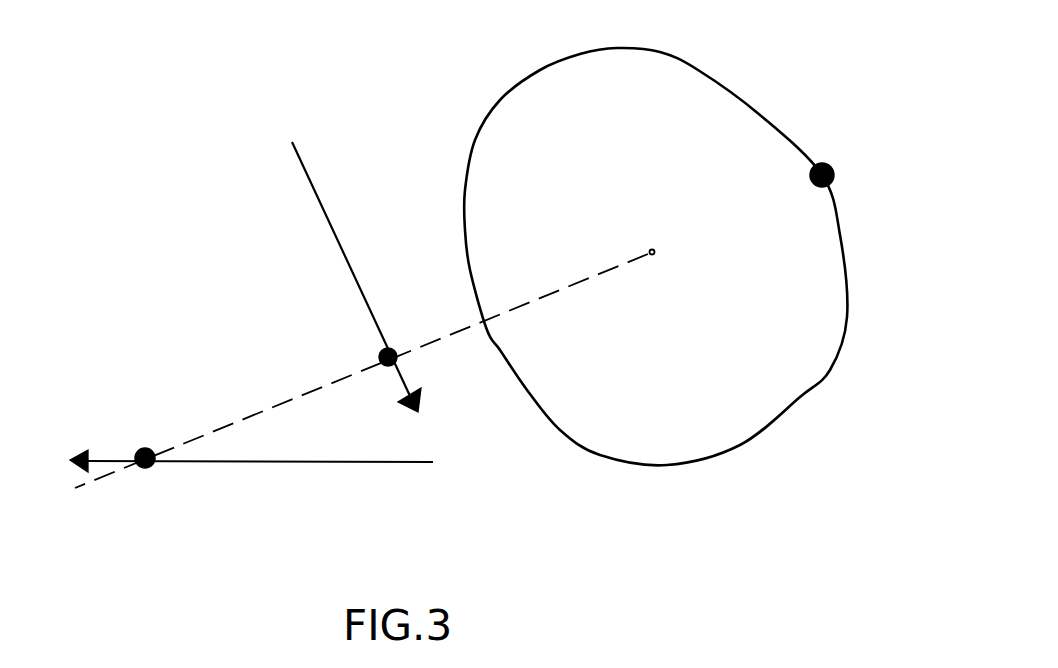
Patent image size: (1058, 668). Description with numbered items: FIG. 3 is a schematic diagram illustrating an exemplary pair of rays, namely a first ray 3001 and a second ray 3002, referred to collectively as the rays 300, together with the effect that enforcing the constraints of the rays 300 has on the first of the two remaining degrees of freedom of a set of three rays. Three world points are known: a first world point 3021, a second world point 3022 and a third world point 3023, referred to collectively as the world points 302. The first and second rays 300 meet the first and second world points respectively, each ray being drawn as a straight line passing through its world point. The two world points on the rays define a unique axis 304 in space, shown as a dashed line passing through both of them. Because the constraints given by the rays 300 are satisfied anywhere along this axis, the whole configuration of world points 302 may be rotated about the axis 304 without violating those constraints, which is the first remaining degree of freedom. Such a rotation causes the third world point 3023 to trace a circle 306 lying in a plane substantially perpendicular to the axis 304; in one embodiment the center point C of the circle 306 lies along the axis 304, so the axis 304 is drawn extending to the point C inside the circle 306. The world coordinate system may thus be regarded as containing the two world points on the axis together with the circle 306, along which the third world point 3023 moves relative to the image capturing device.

The rays 300 is at (251, 342).
The first ray 3001 is at (277, 463).
The second ray 3002 is at (323, 207).
The world points 302 is at (527, 339).
The first world point 3021 is at (155, 468).
The second world point 3022 is at (393, 343).
The third world point 3023 is at (832, 163).
The axis 304 is at (280, 403).
The circle 306 is at (698, 70).